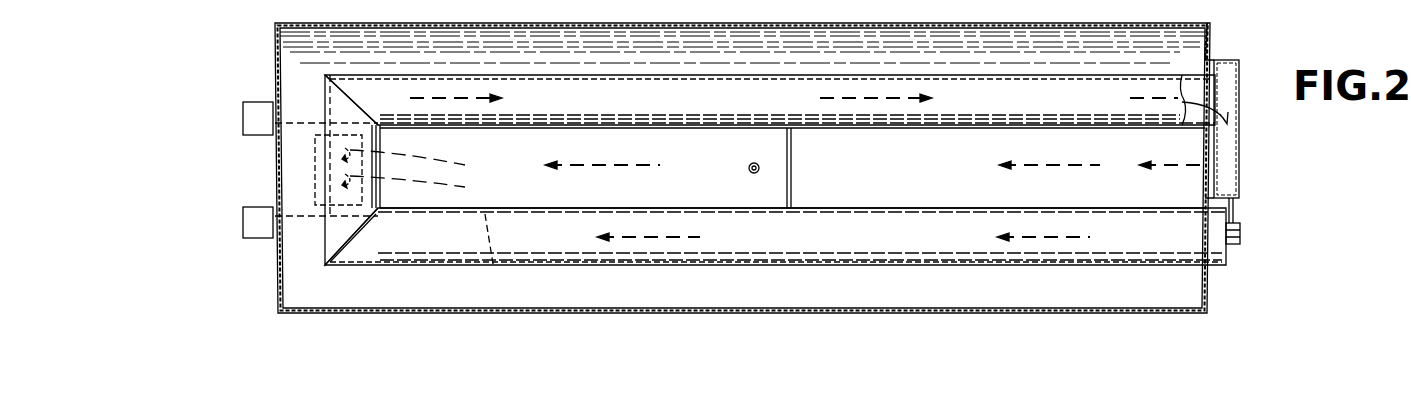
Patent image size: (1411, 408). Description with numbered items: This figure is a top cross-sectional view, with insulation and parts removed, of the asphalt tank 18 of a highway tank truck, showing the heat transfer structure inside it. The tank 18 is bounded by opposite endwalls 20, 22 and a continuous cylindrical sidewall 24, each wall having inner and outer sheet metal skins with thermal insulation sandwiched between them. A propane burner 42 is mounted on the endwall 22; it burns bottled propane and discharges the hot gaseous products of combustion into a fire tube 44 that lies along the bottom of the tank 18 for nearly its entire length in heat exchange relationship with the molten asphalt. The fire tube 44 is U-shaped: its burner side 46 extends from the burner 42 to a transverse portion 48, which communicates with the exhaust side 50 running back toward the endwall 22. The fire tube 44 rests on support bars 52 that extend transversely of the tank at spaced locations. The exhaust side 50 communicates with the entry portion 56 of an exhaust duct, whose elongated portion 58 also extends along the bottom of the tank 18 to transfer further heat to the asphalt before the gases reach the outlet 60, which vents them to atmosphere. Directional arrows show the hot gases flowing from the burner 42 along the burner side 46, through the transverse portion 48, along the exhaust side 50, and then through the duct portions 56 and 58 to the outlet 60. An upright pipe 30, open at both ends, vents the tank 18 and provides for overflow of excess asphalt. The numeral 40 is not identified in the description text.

The tank 18 is at (700, 173).
The endwall 20 is at (277, 68).
The endwall 22 is at (1210, 55).
The sidewall 24 is at (1068, 26).
The upright pipe 30 is at (758, 165).
The inlet fittings 40 is at (258, 215).
The propane burner 42 is at (1240, 240).
The fire tube 44 is at (843, 262).
The burner side 46 is at (634, 268).
The transverse portion 48 is at (338, 115).
The exhaust side 50 is at (722, 82).
The support bars 52 is at (792, 166).
The entry portion 56 is at (1240, 112).
The elongated portion 58 is at (493, 266).
The outlet 60 is at (335, 173).